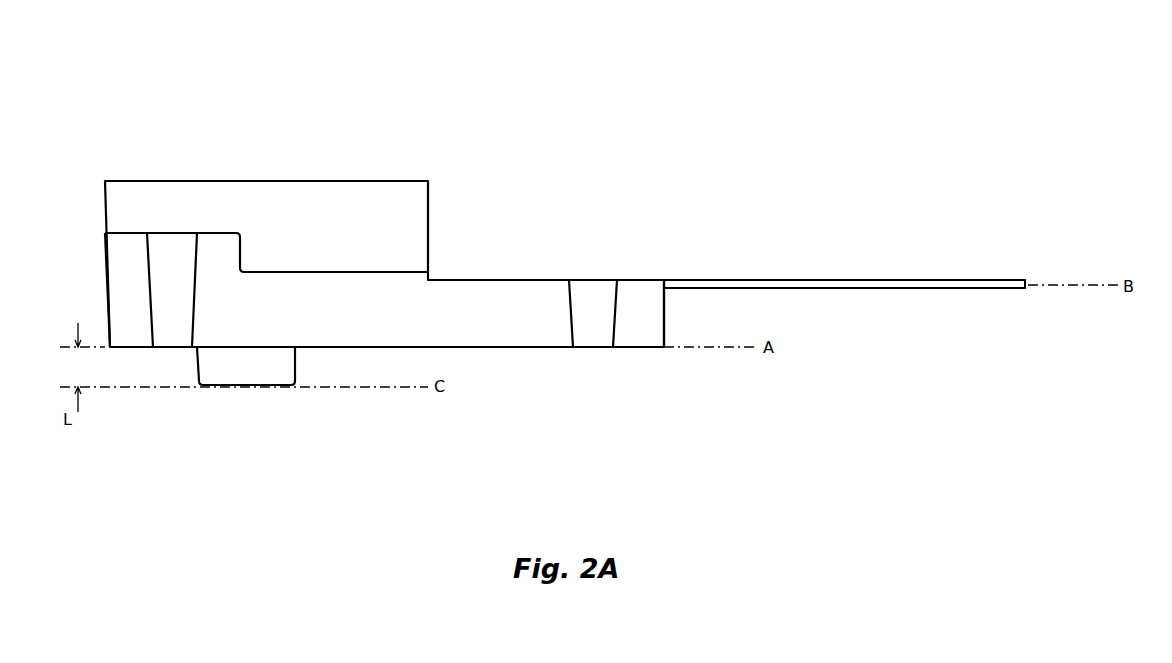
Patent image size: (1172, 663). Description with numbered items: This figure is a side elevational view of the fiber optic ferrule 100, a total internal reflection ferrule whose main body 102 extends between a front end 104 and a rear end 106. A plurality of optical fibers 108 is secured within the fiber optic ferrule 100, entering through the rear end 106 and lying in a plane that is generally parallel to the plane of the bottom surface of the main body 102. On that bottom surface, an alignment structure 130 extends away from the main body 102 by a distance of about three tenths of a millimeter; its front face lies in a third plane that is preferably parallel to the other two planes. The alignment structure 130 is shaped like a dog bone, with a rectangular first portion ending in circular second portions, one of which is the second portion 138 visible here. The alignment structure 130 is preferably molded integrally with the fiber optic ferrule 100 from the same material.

The fiber optic ferrule 100 is at (634, 120).
The main body 102 is at (342, 197).
The front end 104 is at (125, 285).
The rear end 106 is at (665, 320).
The optical fibers 108 is at (863, 280).
The alignment structure 130 is at (223, 387).
The second portion 138 is at (267, 373).